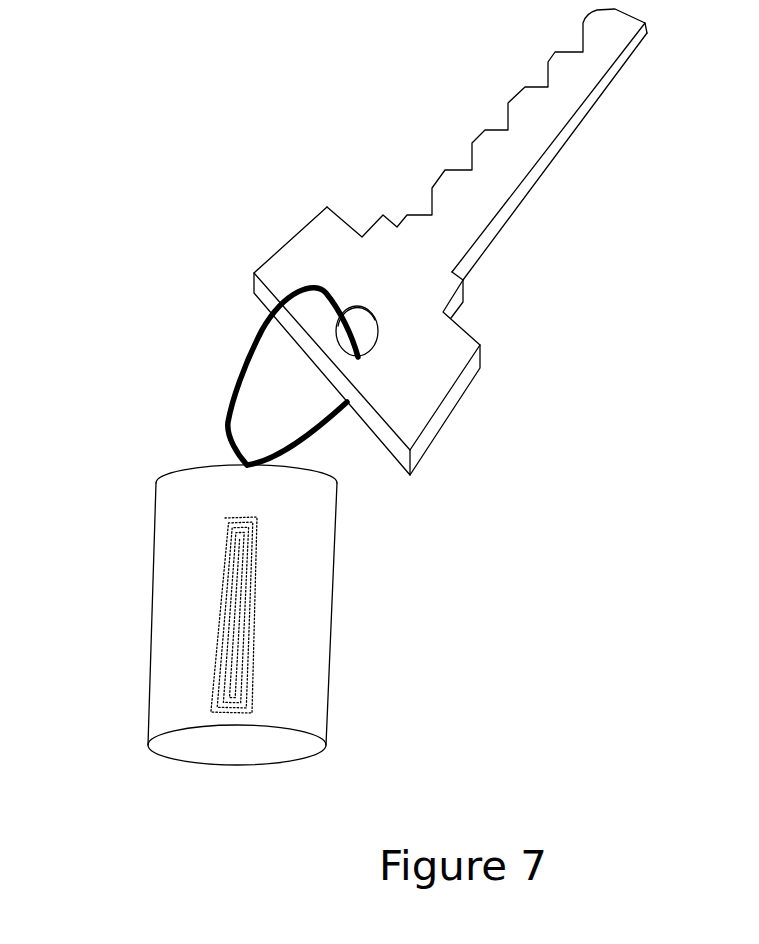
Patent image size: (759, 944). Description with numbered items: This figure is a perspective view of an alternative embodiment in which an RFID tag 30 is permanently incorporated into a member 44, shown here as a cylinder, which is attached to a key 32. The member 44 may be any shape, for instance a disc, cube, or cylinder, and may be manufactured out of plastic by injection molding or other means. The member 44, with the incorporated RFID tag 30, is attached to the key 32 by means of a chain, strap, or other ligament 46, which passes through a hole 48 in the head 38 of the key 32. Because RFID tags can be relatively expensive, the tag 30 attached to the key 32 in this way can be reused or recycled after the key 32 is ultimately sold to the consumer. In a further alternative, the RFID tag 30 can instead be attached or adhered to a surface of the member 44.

The RFID tag 30 is at (223, 663).
The key 32 is at (533, 110).
The head 38 is at (320, 252).
The member 44 is at (310, 538).
The ligament 46 is at (258, 356).
The hole 48 is at (370, 337).